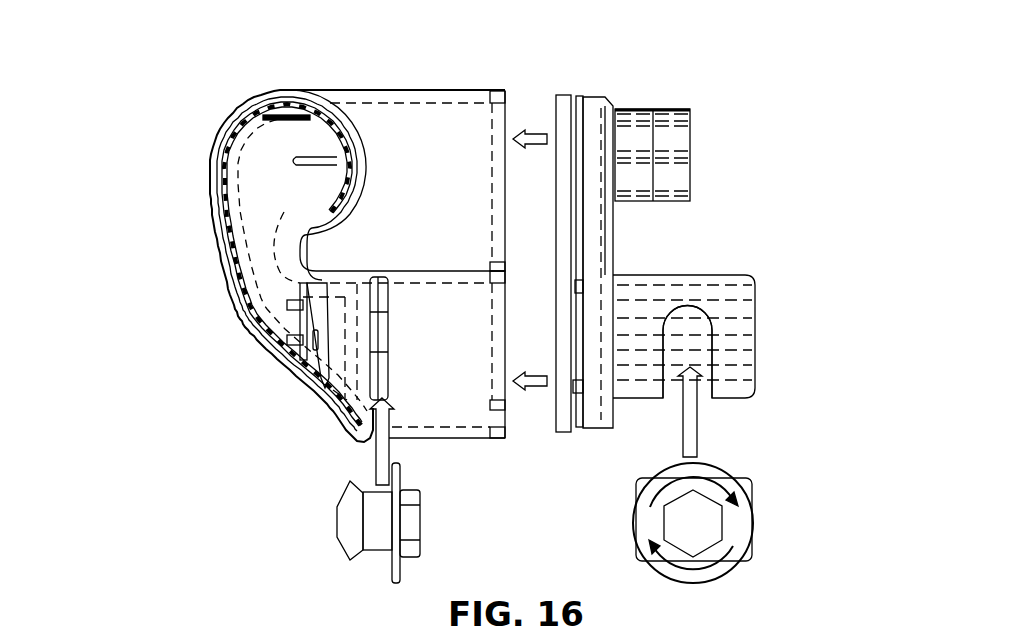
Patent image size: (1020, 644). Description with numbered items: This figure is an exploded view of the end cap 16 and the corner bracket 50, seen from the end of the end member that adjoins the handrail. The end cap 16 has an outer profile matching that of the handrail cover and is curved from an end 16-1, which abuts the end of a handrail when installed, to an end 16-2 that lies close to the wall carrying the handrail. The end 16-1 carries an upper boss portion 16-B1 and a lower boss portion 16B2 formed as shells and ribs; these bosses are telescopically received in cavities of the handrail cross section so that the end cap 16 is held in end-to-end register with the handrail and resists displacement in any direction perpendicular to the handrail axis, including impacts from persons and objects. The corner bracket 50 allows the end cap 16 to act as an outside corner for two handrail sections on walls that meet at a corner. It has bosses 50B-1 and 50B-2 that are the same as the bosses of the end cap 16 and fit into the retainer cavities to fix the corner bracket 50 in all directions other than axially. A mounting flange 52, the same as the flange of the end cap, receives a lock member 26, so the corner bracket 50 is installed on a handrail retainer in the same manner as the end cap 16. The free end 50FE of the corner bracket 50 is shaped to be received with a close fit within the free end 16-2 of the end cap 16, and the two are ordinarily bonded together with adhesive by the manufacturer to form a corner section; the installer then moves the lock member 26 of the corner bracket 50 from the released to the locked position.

The end cap 16 is at (380, 70).
The upper boss portion 16-B1 is at (282, 112).
The end of the end cap 16-1 is at (262, 218).
The lower boss portion 16B2 is at (300, 327).
The end of the end cap 16-2 is at (508, 100).
The corner bracket 50 is at (672, 92).
The boss of the corner bracket 50B-1 is at (682, 205).
The boss of the corner bracket 50B-2 is at (680, 388).
The free end of the corner bracket 50FE is at (566, 422).
The mounting flange 52 is at (696, 273).
The lock member 26 is at (325, 551).